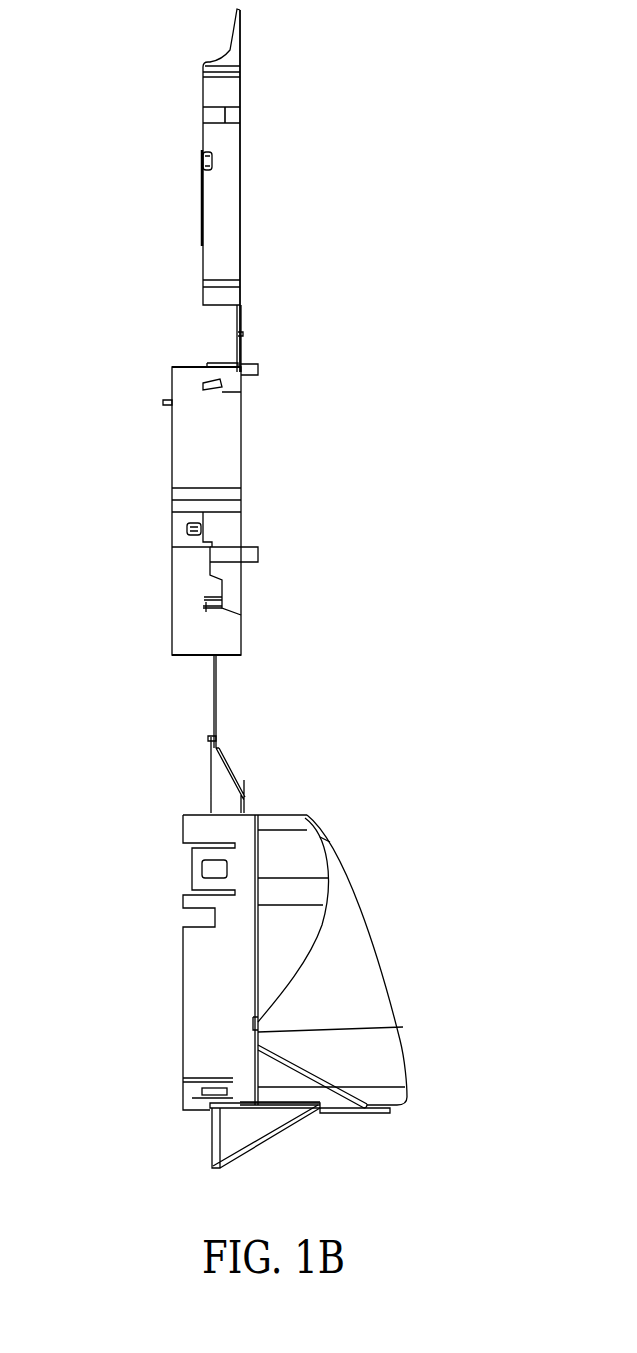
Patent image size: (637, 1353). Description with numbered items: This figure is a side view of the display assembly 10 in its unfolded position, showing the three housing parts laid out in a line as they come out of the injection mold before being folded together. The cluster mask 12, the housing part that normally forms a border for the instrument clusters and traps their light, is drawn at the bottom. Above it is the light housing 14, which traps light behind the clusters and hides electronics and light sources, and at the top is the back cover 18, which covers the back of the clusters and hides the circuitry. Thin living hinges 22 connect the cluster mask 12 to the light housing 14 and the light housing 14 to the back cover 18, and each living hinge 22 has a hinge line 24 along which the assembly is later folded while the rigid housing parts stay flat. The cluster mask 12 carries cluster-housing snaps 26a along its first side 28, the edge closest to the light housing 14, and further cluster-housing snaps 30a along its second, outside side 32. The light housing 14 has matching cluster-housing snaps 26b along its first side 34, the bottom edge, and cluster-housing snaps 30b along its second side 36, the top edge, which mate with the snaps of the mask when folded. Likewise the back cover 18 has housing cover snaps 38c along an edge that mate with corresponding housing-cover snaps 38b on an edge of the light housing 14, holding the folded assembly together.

The display assembly 10 is at (300, 493).
The cluster mask 12 is at (405, 1028).
The light housing 14 is at (171, 492).
The back cover 18 is at (204, 161).
The living hinges 22 is at (244, 327).
The hinge line 24 is at (244, 334).
The cluster-housing snaps 26a is at (202, 870).
The cluster-housing snaps 26b is at (204, 600).
The first side 28 is at (278, 813).
The cluster-housing snaps 30a is at (192, 1087).
The cluster-housing snaps 30b is at (203, 385).
The second side 32 is at (342, 1114).
The first side 34 is at (188, 658).
The second side 36 is at (188, 366).
The housing-cover snaps 38b is at (187, 528).
The housing cover snaps 38c is at (203, 114).